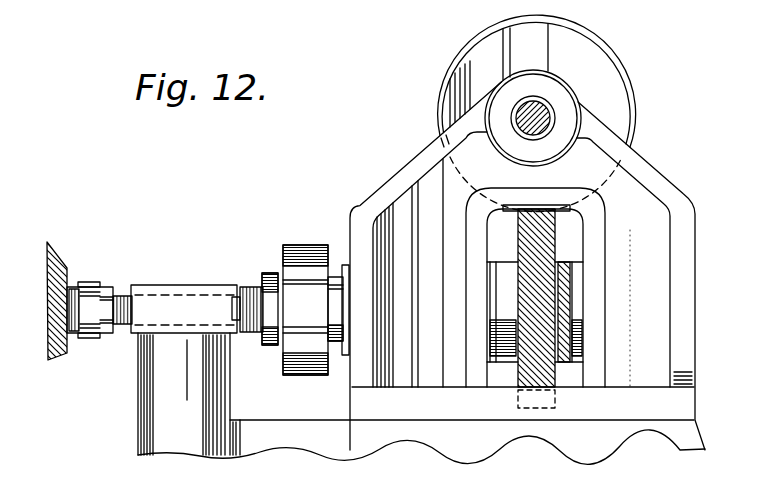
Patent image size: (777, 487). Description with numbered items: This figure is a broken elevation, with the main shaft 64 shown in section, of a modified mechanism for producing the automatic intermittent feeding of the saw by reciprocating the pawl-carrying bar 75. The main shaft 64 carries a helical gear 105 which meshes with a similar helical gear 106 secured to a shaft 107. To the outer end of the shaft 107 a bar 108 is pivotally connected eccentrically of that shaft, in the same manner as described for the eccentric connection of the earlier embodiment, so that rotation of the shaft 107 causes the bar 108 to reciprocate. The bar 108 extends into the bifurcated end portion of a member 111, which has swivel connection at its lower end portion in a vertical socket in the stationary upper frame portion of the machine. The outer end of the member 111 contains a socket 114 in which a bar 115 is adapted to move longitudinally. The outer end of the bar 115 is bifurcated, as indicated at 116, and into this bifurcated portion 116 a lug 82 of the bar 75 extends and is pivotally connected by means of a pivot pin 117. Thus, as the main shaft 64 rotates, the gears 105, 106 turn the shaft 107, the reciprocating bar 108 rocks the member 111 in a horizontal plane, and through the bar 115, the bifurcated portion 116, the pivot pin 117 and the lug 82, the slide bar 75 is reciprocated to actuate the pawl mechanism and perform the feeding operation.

The main shaft 64 is at (552, 117).
The helical gear 105 is at (630, 124).
The helical gear 106 is at (557, 247).
The shaft 107 is at (334, 347).
The bar 108 is at (270, 272).
The member 111 is at (187, 347).
The socket 114 is at (162, 298).
The bar 115 is at (125, 314).
The bifurcated portion 116 is at (92, 326).
The pivot pin 117 is at (93, 282).
The bar 75 is at (68, 266).
The lug 82 is at (77, 307).